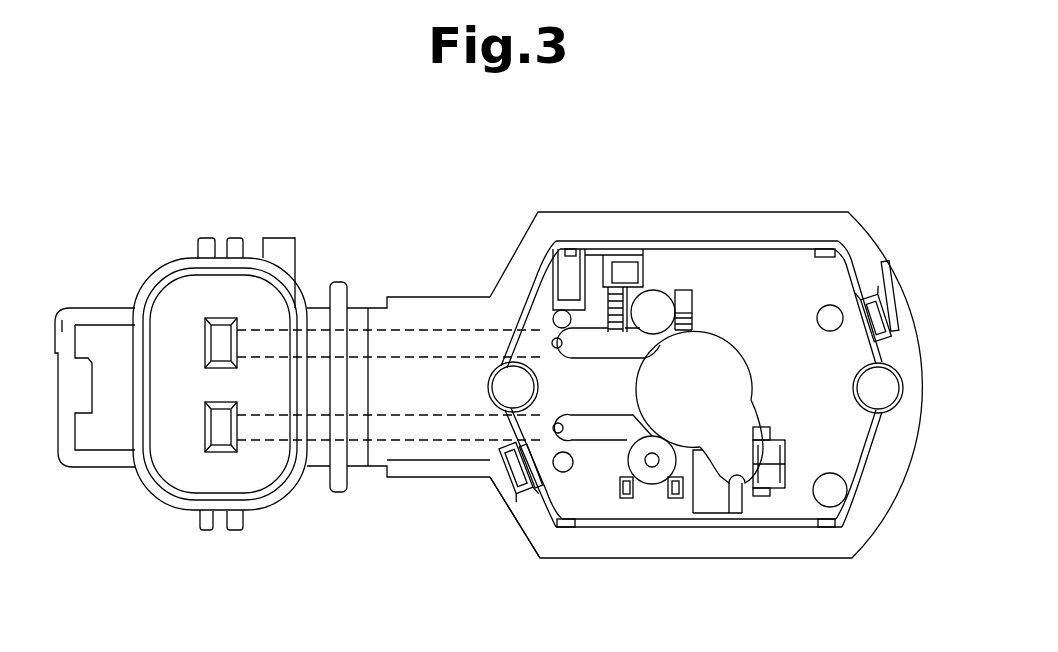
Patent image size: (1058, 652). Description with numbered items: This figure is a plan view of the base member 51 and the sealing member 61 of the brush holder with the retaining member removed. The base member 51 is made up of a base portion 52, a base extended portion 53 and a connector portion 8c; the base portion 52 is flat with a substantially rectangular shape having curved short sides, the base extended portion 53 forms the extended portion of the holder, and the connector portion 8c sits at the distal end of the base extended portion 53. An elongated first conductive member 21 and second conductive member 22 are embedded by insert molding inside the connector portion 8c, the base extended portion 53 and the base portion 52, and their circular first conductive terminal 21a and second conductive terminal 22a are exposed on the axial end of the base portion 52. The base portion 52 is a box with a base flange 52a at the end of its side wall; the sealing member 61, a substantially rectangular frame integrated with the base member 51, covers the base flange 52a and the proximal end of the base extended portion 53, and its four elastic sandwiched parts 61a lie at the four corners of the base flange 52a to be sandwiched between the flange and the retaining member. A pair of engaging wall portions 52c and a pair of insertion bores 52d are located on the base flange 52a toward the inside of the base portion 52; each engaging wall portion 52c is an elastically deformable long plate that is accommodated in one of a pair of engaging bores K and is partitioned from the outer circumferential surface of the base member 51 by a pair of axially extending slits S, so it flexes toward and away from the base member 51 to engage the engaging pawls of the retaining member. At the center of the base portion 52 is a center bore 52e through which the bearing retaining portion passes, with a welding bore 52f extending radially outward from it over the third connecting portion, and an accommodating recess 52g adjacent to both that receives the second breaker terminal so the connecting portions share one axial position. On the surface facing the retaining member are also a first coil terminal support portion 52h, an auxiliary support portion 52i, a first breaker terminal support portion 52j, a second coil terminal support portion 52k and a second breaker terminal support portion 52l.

The connector portion 8c is at (210, 238).
The first conductive member 21 is at (417, 327).
The first conductive terminal 21a is at (655, 297).
The second conductive member 22 is at (410, 442).
The second conductive terminal 22a is at (655, 484).
The base member 51 is at (800, 290).
The base portion 52 is at (740, 268).
The base flange 52a is at (847, 265).
The engaging wall portions 52c is at (513, 480).
The insertion bores 52d is at (502, 393).
The center bore 52e is at (727, 345).
The welding bore 52f is at (735, 492).
The accommodating recess 52g is at (705, 462).
The first coil terminal support portion 52h is at (618, 270).
The auxiliary support portion 52i is at (697, 300).
The first breaker terminal support portion 52j is at (624, 500).
The second coil terminal support portion 52k is at (787, 448).
The second breaker terminal support portion 52l is at (760, 427).
The base extended portion 53 is at (377, 467).
The sealing member 61 is at (858, 267).
The sandwiched parts 61a is at (563, 242).
The engaging bores K is at (520, 527).
The slits S is at (537, 518).